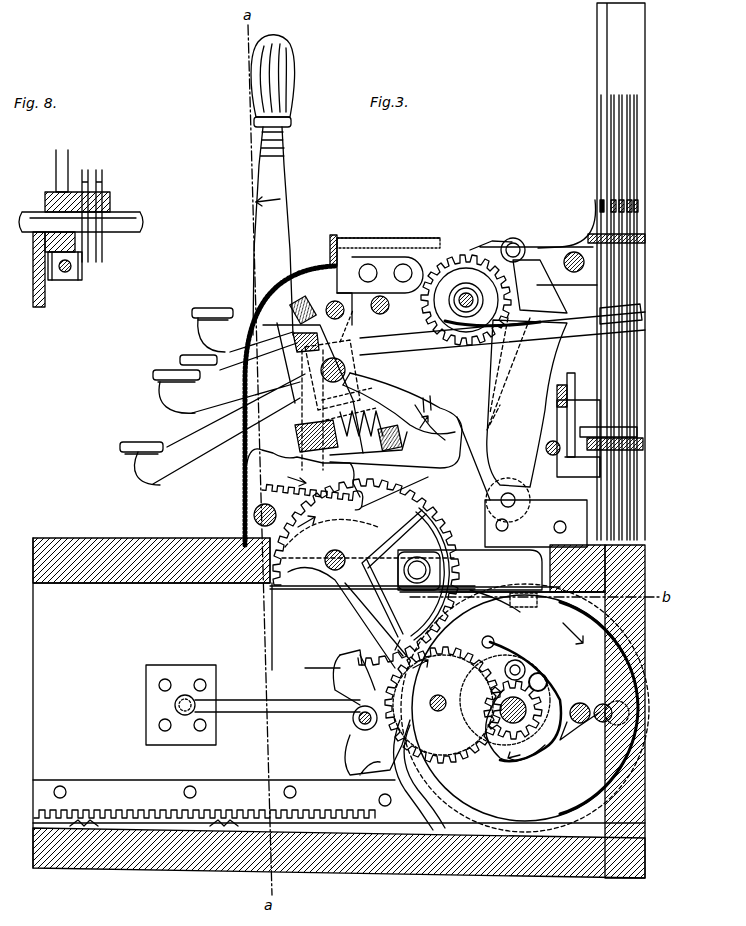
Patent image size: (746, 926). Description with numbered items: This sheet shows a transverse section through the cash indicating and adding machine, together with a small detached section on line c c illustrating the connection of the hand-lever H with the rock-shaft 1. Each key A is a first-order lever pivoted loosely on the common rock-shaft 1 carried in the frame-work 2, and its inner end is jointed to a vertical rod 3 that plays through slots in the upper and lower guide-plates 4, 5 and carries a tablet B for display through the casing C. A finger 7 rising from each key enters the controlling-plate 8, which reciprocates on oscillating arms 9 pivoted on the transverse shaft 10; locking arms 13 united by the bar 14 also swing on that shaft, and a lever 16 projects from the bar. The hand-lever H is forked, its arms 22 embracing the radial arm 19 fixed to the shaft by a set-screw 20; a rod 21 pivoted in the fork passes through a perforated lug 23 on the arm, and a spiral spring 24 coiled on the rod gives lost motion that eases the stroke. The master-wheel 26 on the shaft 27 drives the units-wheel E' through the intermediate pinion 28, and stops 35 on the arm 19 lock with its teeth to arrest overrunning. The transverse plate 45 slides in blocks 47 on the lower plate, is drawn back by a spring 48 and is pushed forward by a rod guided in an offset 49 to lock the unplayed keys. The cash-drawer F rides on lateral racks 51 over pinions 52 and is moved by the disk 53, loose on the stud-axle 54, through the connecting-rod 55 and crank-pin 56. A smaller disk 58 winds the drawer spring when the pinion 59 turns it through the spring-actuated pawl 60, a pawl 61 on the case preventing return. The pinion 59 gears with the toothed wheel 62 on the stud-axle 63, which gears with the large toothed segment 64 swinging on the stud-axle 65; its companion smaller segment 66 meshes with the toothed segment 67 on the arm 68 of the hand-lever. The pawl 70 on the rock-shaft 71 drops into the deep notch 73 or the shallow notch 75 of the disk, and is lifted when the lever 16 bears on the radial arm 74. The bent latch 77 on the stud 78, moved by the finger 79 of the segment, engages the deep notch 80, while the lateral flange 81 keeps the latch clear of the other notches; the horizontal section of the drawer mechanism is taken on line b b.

In FIG. 8, the rock-shaft 1 is at (128, 218).
In FIG. 3, the rock-shaft 1 is at (322, 370).
In FIG. 3, the frame-work 2 is at (541, 398).
In FIG. 3, the vertical rod 3 is at (603, 323).
In FIG. 3, the upper guide-plate 4 is at (645, 238).
In FIG. 3, the lower guide-plate 5 is at (643, 444).
In FIG. 3, the finger 7 is at (534, 275).
In FIG. 3, the controlling-plate 8 is at (580, 312).
In FIG. 3, the oscillating arm 9 is at (527, 403).
In FIG. 3, the transverse shaft 10 is at (515, 497).
In FIG. 3, the oscillating arm 13 is at (501, 374).
In FIG. 3, the parallel bar 14 is at (449, 432).
In FIG. 3, the lever 16 is at (396, 468).
In FIG. 8, the radial arm 19 is at (33, 262).
In FIG. 3, the radial arm 19 is at (402, 403).
In FIG. 8, the set-screw 20 is at (45, 192).
In FIG. 3, the set-screw 20 is at (345, 362).
In FIG. 8, the rod 21 is at (65, 272).
In FIG. 3, the rod 21 is at (324, 437).
In FIG. 8, the fork arm 22 is at (50, 296).
In FIG. 3, the fork arm 22 is at (324, 407).
In FIG. 3, the perforated lug 23 is at (394, 447).
In FIG. 3, the spiral spring 24 is at (361, 437).
In FIG. 3, the master-wheel 26 is at (466, 300).
In FIG. 3, the shaft 27 is at (459, 300).
In FIG. 3, the intermediate pinion 28 is at (480, 250).
In FIG. 3, the stops 35 is at (432, 405).
In FIG. 3, the transverse plate 45 is at (571, 376).
In FIG. 3, the block 47 is at (580, 465).
In FIG. 3, the spring 48 is at (553, 455).
In FIG. 3, the offset 49 is at (557, 415).
In FIG. 3, the lateral rack 51 is at (212, 801).
In FIG. 3, the pinion 52 is at (154, 817).
In FIG. 3, the disk 53 is at (525, 708).
In FIG. 3, the stud-axle 54 is at (505, 704).
In FIG. 3, the connecting-rod 55 is at (253, 705).
In FIG. 3, the crank-pin 56 is at (610, 704).
In FIG. 3, the smaller disk 58 is at (517, 725).
In FIG. 3, the pinion 59 is at (535, 710).
In FIG. 3, the spring-actuated pawl 60 is at (490, 660).
In FIG. 3, the pawl 61 is at (578, 722).
In FIG. 3, the toothed wheel 62 is at (443, 705).
In FIG. 3, the stud-axle 63 is at (430, 704).
In FIG. 3, the large toothed segment 64 is at (440, 600).
In FIG. 3, the stud-axle 65 is at (345, 575).
In FIG. 3, the smaller toothed segment 66 is at (366, 572).
In FIG. 3, the toothed segment 67 is at (312, 494).
In FIG. 3, the arm 68 is at (303, 473).
In FIG. 3, the pawl 70 is at (470, 570).
In FIG. 3, the rock-shaft 71 is at (417, 570).
In FIG. 3, the notch 73 is at (495, 605).
In FIG. 3, the radial arm 74 is at (285, 503).
In FIG. 3, the second notch 75 is at (540, 815).
In FIG. 3, the bent latch 77 is at (371, 747).
In FIG. 3, the stud 78 is at (360, 728).
In FIG. 3, the finger 79 is at (354, 677).
In FIG. 3, the deep notch 80 is at (405, 760).
In FIG. 3, the lateral flange 81 is at (560, 598).
In FIG. 8, the key A is at (99, 178).
In FIG. 3, the key A is at (382, 396).
In FIG. 3, the tablet B is at (600, 108).
In FIG. 3, the casing C is at (245, 492).
In FIG. 3, the units-wheel E' is at (385, 272).
In FIG. 3, the cash-drawer F is at (339, 708).
In FIG. 8, the hand-lever H is at (75, 152).
In FIG. 3, the hand-lever H is at (273, 185).
In FIG. 3, the section line b b is at (315, 667).
In FIG. 3, the section line c c is at (351, 367).